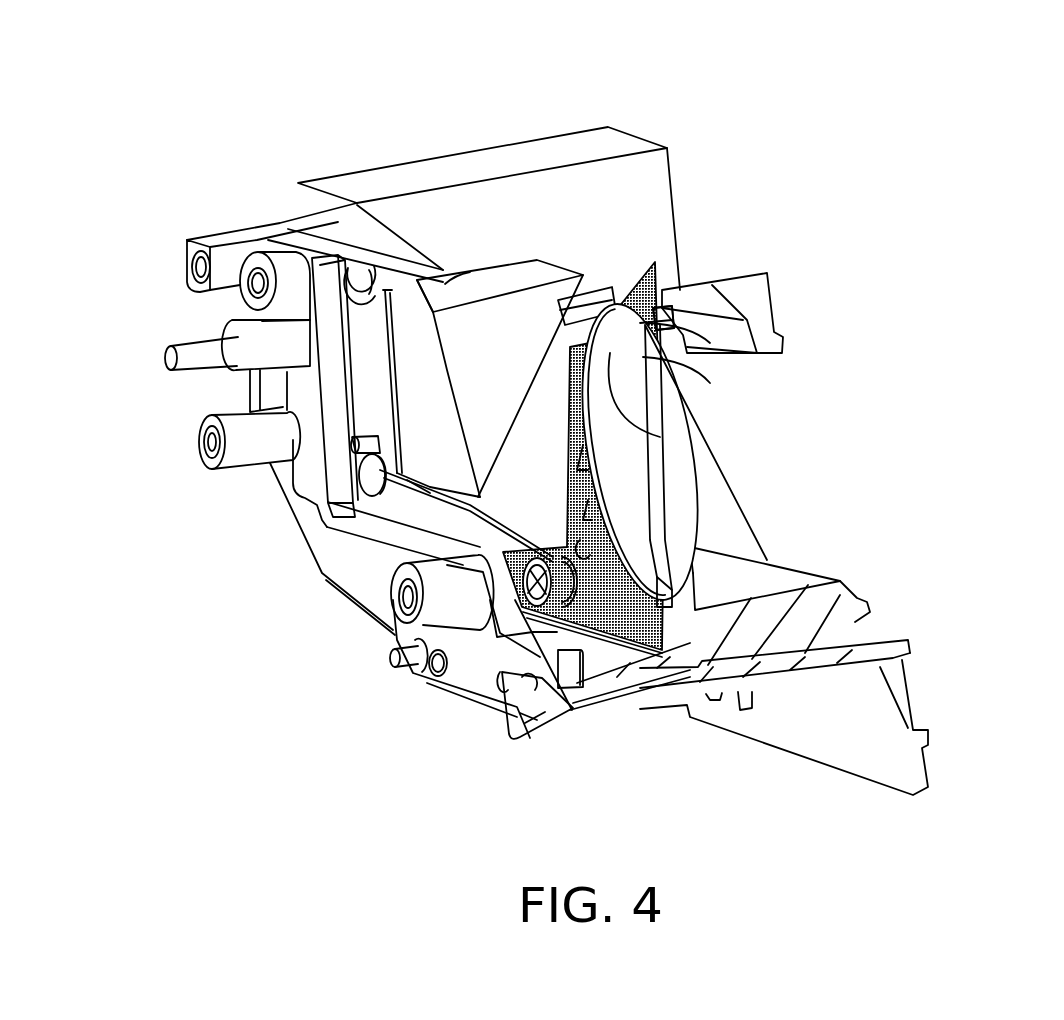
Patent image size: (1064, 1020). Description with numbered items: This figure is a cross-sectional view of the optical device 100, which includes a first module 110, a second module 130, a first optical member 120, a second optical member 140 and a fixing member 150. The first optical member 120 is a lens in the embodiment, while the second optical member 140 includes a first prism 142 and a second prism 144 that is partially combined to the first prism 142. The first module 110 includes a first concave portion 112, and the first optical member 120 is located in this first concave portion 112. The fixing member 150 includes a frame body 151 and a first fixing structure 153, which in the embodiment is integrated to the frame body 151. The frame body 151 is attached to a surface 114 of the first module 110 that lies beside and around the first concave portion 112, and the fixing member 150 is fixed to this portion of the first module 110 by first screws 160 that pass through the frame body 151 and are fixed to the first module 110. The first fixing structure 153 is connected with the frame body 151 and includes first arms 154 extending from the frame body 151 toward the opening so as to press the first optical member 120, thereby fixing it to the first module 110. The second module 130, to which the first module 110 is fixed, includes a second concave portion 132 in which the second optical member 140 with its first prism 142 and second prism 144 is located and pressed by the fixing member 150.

The optical device 100 is at (981, 172).
The first module 110 is at (768, 303).
The first concave portion 112 is at (640, 365).
The surface 114 is at (612, 400).
The first optical member 120 is at (683, 462).
The second module 130 is at (383, 220).
The second concave portion 132 is at (478, 273).
The second optical member 140 is at (556, 248).
The first prism 142 is at (528, 283).
The second prism 144 is at (580, 293).
The fixing member 150 is at (691, 340).
The frame body 151 is at (640, 292).
The first fixing structure 153 is at (663, 318).
The first arm 154 is at (700, 303).
The first screw 160 is at (583, 600).